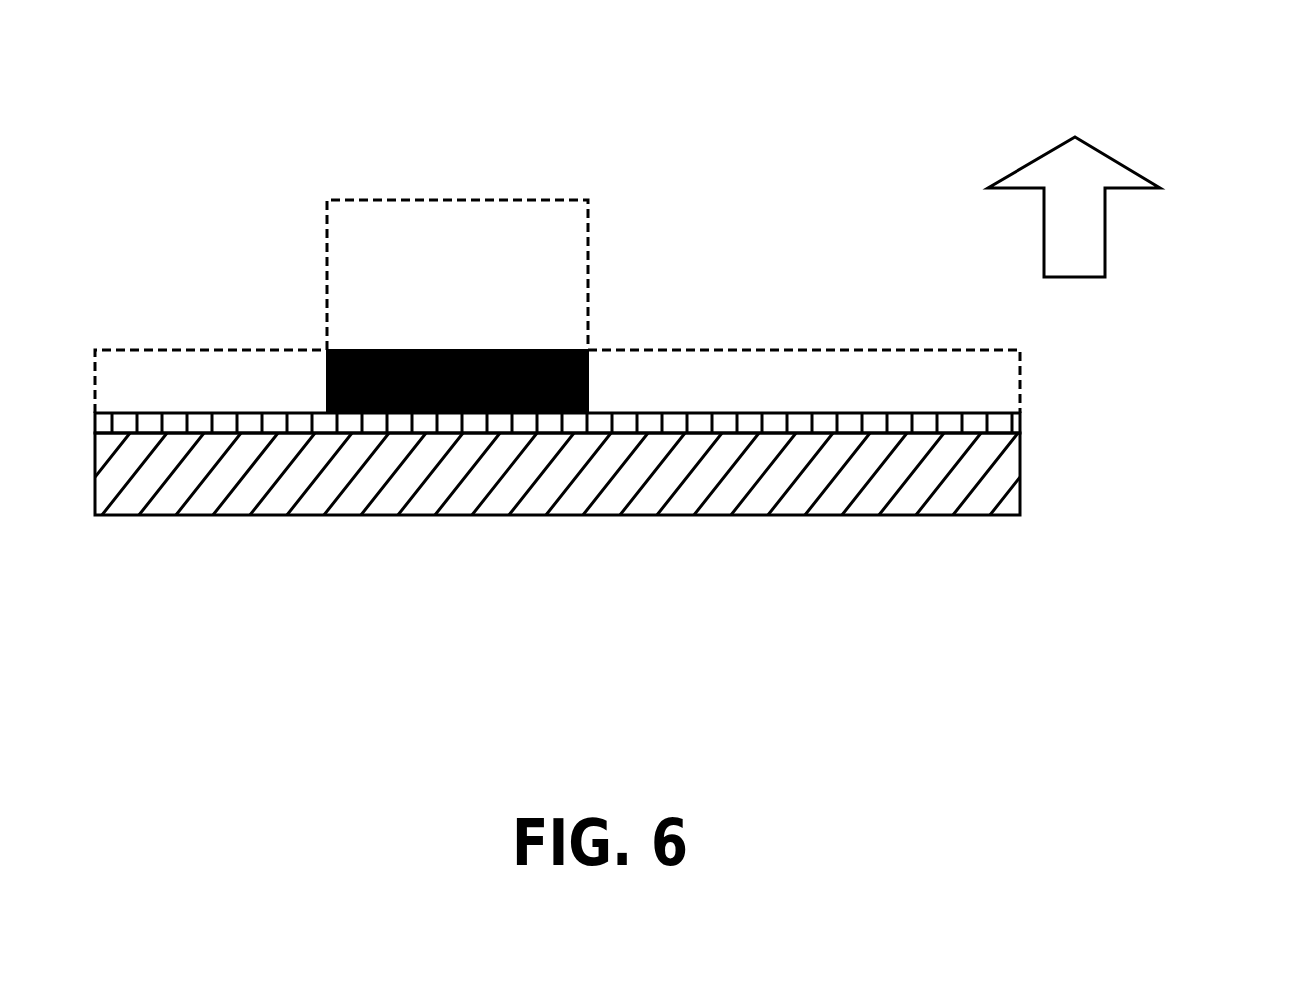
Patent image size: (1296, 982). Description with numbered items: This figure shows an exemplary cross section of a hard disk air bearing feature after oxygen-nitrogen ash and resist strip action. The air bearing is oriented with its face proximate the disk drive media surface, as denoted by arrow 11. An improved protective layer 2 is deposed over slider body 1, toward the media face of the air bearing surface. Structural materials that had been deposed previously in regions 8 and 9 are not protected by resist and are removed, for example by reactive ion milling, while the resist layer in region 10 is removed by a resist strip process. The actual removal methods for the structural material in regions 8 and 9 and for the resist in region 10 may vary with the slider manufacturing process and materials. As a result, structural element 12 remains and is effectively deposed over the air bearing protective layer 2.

The slider body 1 is at (1022, 490).
The protective layer 2 is at (1024, 413).
The region 8 is at (790, 373).
The region 9 is at (208, 312).
The region 10 is at (303, 237).
The arrow 11 is at (1160, 168).
The structural element 12 is at (592, 344).